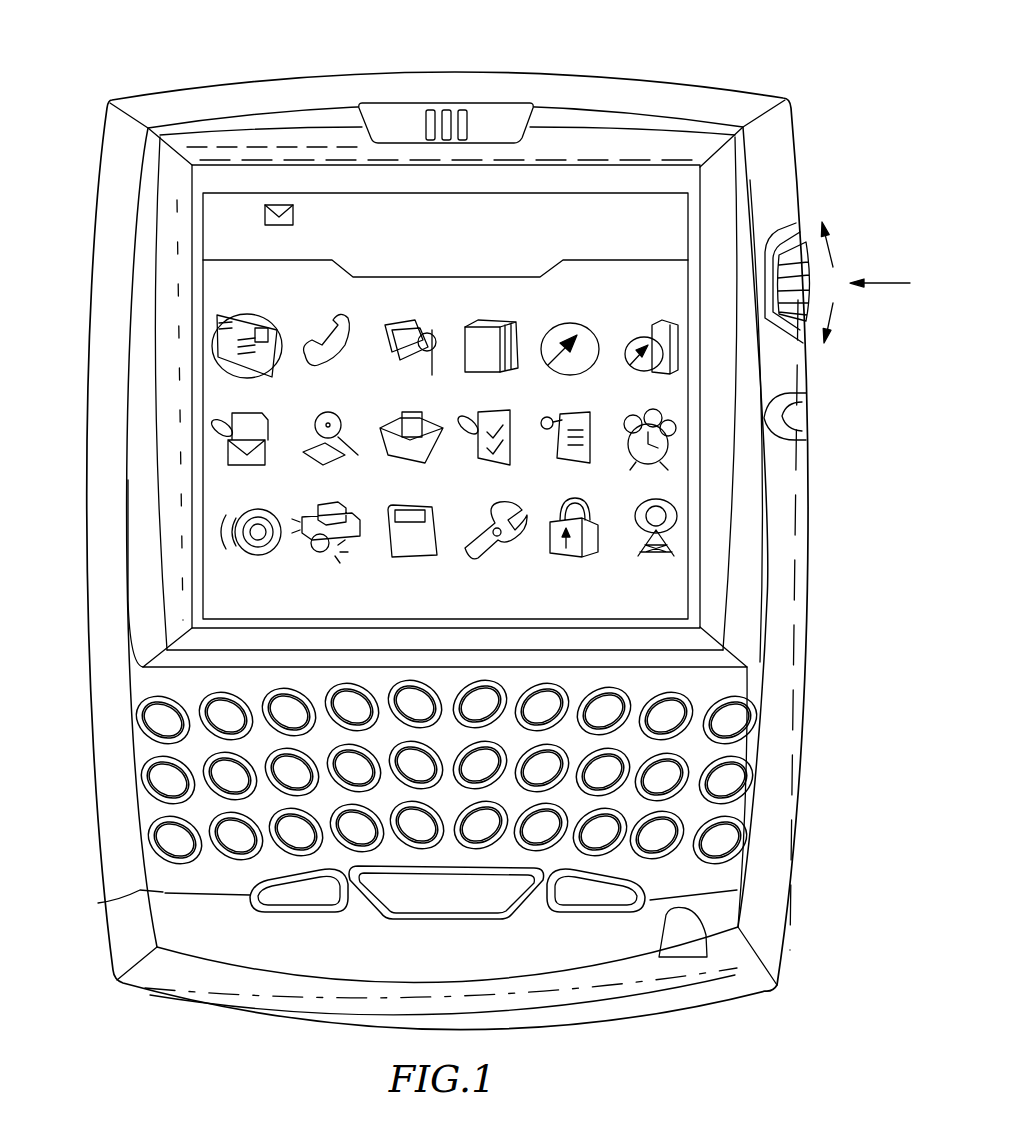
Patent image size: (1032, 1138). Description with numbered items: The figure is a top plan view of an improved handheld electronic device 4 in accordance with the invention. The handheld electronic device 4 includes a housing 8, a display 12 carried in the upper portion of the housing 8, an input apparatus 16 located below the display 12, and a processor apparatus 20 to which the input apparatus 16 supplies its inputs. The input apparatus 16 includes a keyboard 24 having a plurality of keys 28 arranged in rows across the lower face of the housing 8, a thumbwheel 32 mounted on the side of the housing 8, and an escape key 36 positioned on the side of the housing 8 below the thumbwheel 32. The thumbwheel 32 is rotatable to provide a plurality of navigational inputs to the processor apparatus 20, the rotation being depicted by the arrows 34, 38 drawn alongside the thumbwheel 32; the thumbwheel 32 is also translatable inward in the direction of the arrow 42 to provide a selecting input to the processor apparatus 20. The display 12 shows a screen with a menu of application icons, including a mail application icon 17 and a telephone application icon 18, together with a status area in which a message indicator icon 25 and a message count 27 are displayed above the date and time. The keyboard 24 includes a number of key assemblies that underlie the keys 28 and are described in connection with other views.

The handheld electronic device 4 is at (575, 63).
The housing 8 is at (90, 560).
The display 12 is at (464, 396).
The input apparatus 16 is at (471, 651).
The mail application icon 17 is at (258, 318).
The phone application icon 18 is at (348, 352).
The processor apparatus 20 is at (160, 907).
The keyboard 24 is at (458, 818).
The message indicator icon 25 is at (293, 215).
The message count 27 is at (243, 228).
The keys 28 is at (163, 836).
The thumbwheel 32 is at (810, 245).
The upward rotation direction 34 is at (830, 247).
The escape key 36 is at (800, 410).
The downward rotation direction 38 is at (837, 310).
The arrow 42 is at (885, 283).